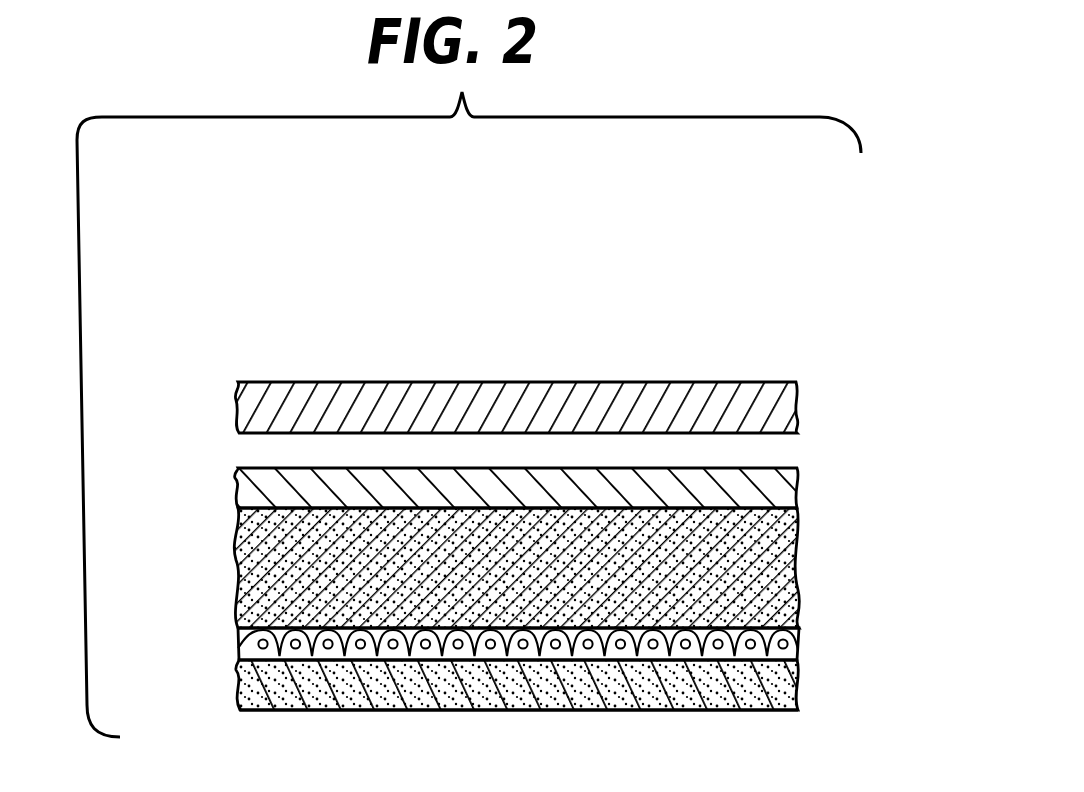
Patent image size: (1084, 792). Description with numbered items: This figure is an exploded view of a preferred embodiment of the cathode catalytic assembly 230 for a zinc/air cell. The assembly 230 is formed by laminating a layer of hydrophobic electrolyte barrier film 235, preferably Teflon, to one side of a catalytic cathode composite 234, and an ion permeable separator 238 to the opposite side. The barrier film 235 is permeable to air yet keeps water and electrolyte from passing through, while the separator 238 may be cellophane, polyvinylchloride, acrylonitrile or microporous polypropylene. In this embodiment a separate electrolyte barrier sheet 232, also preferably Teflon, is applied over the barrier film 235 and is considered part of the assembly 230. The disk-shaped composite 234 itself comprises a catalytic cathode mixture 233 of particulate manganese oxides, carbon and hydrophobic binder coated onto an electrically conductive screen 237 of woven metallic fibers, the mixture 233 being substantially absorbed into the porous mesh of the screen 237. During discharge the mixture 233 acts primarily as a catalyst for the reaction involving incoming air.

The cathode catalytic assembly 230 is at (207, 398).
The separate electrolyte barrier sheet 232 is at (793, 400).
The hydrophobic electrolyte barrier film 235 is at (793, 485).
The catalytic cathode mixture 233 is at (793, 543).
The catalytic cathode composite 234 is at (815, 593).
The electrically conductive screen 237 is at (783, 661).
The ion permeable separator 238 is at (744, 711).